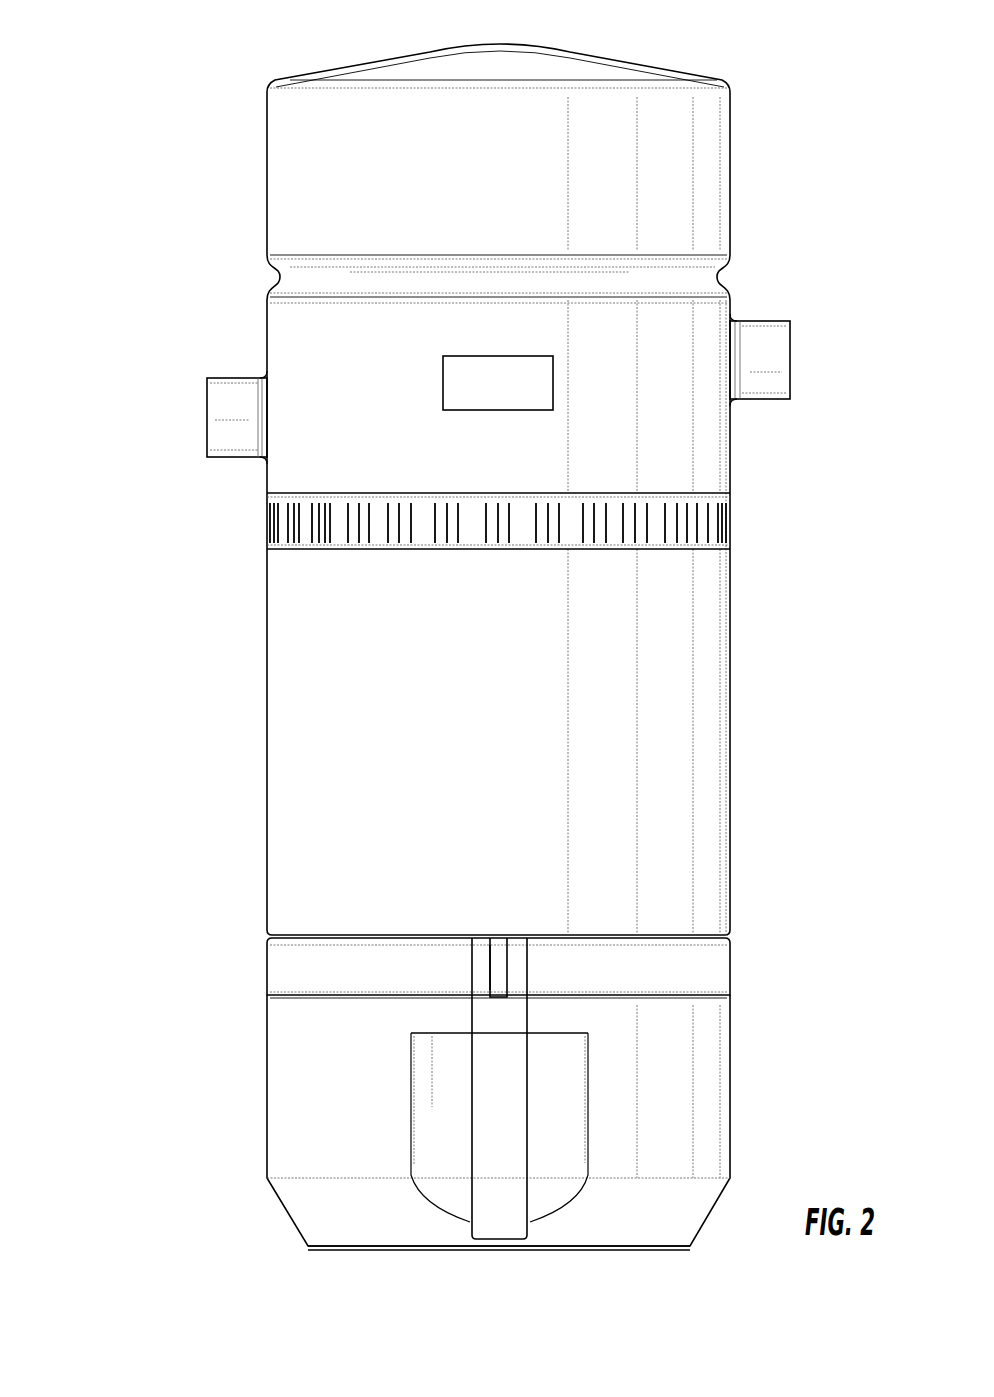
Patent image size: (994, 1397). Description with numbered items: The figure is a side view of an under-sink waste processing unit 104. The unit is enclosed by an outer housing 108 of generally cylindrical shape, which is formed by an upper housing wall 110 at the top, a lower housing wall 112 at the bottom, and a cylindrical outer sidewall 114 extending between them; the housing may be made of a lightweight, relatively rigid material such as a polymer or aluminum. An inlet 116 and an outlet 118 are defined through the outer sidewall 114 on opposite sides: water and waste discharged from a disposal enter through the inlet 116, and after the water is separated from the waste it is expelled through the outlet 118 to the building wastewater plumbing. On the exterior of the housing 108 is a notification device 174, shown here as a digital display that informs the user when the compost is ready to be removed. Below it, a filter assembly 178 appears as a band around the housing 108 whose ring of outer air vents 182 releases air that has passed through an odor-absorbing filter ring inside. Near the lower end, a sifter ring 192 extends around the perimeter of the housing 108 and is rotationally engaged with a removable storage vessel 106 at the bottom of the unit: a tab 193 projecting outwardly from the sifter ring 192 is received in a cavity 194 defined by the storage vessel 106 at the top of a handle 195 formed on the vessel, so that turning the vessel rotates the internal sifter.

The waste processing unit 104 is at (157, 156).
The removable storage vessel 106 is at (301, 1135).
The outer housing 108 is at (304, 695).
The upper housing wall 110 is at (523, 56).
The lower housing wall 112 is at (500, 1251).
The cylindrical outer sidewall 114 is at (702, 727).
The inlet 116 is at (207, 410).
The outlet 118 is at (790, 350).
The notification device 174 is at (497, 356).
The filter assembly 178 is at (269, 525).
The outer air vents 182 is at (486, 549).
The sifter ring 192 is at (290, 973).
The tab 193 is at (498, 945).
The cavity 194 is at (490, 968).
The handle 195 is at (510, 1097).